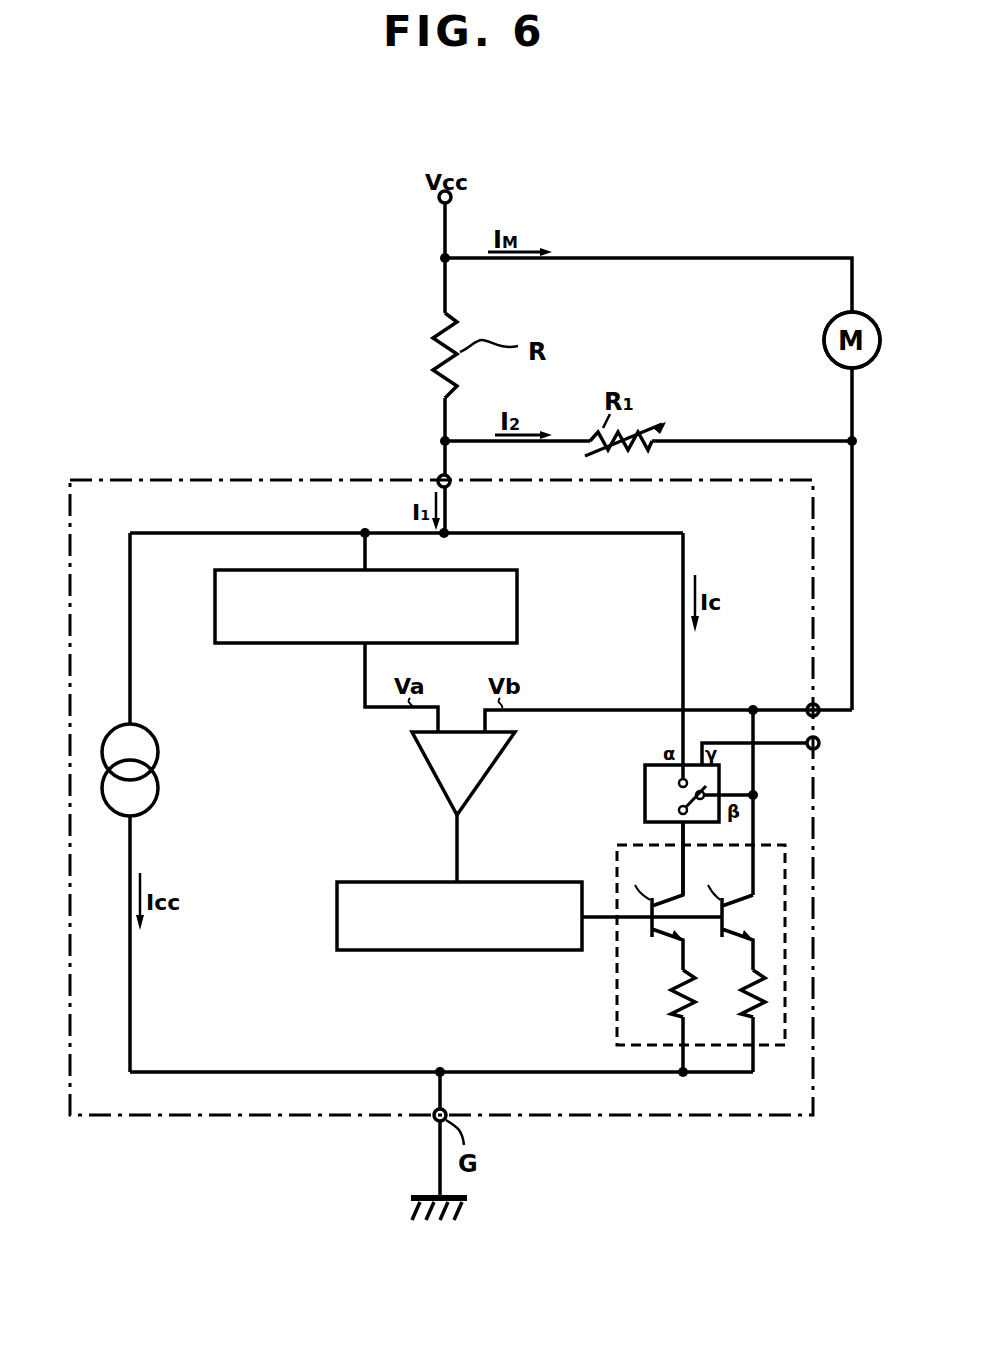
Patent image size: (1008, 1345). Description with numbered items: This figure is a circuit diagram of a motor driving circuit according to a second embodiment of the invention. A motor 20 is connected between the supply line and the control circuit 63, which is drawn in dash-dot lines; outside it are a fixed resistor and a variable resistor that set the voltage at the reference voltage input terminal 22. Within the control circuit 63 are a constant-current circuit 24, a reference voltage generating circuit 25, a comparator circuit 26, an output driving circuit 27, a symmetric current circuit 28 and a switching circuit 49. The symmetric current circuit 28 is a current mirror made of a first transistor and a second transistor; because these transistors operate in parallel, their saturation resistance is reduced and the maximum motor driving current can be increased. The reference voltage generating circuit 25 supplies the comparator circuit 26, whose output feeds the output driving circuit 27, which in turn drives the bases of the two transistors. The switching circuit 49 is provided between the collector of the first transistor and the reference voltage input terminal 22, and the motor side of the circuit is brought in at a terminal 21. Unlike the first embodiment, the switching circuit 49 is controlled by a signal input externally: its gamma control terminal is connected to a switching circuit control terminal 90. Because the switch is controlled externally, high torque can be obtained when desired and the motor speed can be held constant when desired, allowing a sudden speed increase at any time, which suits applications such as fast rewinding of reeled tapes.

The motor 20 is at (872, 362).
The motor terminal 21 is at (819, 715).
The reference voltage input terminal 22 is at (438, 477).
The constant-current circuit 24 is at (158, 788).
The reference voltage generating circuit 25 is at (276, 645).
The comparator circuit 26 is at (425, 776).
The output driving circuit 27 is at (387, 952).
The symmetric current circuit 28 is at (615, 985).
The switching circuit 49 is at (645, 800).
The control circuit 63 is at (813, 950).
The switching circuit control terminal 90 is at (819, 748).